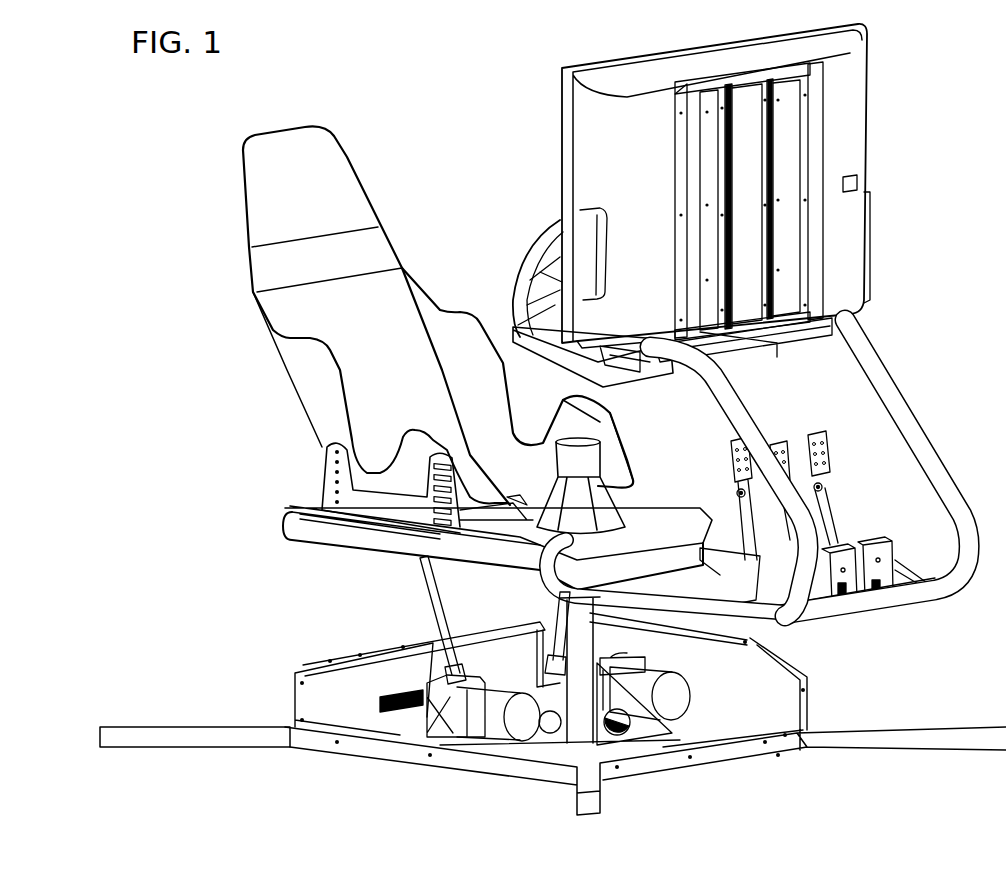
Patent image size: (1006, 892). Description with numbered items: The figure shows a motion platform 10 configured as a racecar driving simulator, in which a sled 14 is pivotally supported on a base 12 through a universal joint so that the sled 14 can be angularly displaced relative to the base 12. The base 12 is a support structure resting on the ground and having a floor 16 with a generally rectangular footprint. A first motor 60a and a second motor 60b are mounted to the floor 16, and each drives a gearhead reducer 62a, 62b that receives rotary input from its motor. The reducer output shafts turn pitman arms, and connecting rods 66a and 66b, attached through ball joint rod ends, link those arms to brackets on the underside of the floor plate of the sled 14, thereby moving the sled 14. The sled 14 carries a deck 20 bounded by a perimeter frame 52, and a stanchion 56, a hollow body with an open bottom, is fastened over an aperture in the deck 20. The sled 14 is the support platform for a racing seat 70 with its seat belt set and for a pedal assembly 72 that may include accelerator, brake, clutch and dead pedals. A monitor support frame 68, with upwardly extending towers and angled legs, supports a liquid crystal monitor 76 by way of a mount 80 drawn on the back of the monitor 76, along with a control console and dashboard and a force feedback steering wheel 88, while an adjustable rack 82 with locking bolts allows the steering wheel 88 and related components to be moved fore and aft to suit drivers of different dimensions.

The motion platform 10 is at (390, 88).
The base 12 is at (733, 776).
The sled 14 is at (276, 505).
The floor 16 is at (686, 738).
The deck 20 is at (652, 510).
The perimeter frame 52 is at (306, 532).
The stanchion 56 is at (600, 457).
The first motor 60a is at (490, 722).
The second motor 60b is at (676, 696).
The gearhead reducer 62a is at (445, 685).
The gearhead reducer 62b is at (628, 655).
The connecting rod 66a is at (426, 608).
The connecting rod 66b is at (563, 613).
The monitor support frame 68 is at (895, 381).
The racing seat 70 is at (331, 183).
The pedal assembly 72 is at (825, 520).
The monitor 76 is at (858, 26).
The monitor mount 80 is at (740, 85).
The adjustable rack 82 is at (546, 346).
The force feedback steering wheel 88 is at (533, 256).